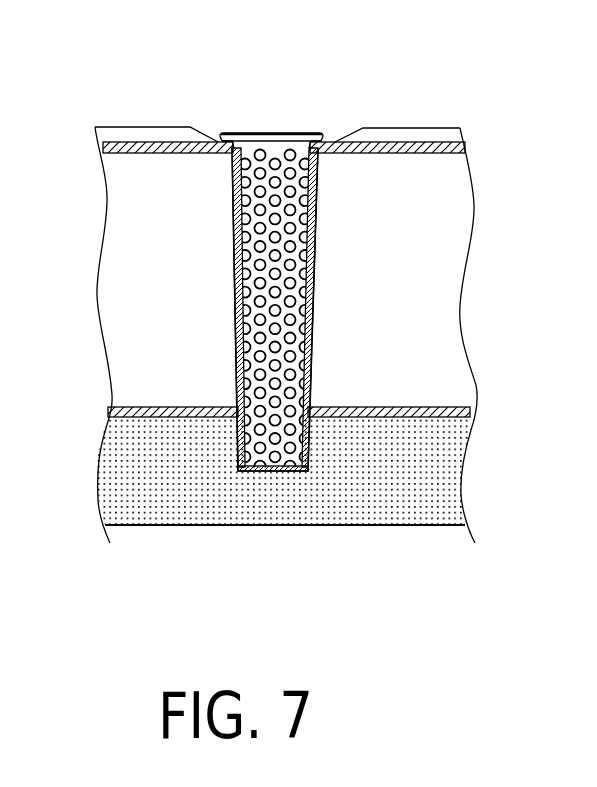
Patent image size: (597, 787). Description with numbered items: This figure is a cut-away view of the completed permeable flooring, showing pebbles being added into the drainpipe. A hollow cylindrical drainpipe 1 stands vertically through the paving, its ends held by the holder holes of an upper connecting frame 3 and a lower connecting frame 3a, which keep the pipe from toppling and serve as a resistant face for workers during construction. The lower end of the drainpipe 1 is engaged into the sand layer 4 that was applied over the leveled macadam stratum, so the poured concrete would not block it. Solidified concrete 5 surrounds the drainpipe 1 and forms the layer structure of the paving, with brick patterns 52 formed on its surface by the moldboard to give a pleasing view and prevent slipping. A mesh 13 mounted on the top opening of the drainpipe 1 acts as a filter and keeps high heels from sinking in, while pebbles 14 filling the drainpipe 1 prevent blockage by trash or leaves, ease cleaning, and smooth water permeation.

The drainpipe 1 is at (167, 310).
The connecting frame 3 is at (160, 152).
The lower connecting frame 3a is at (400, 407).
The sand layer 4 is at (423, 472).
The concrete 5 is at (433, 203).
The mesh 13 is at (292, 133).
The pebbles 14 is at (253, 330).
The brick pattern 52 is at (419, 130).